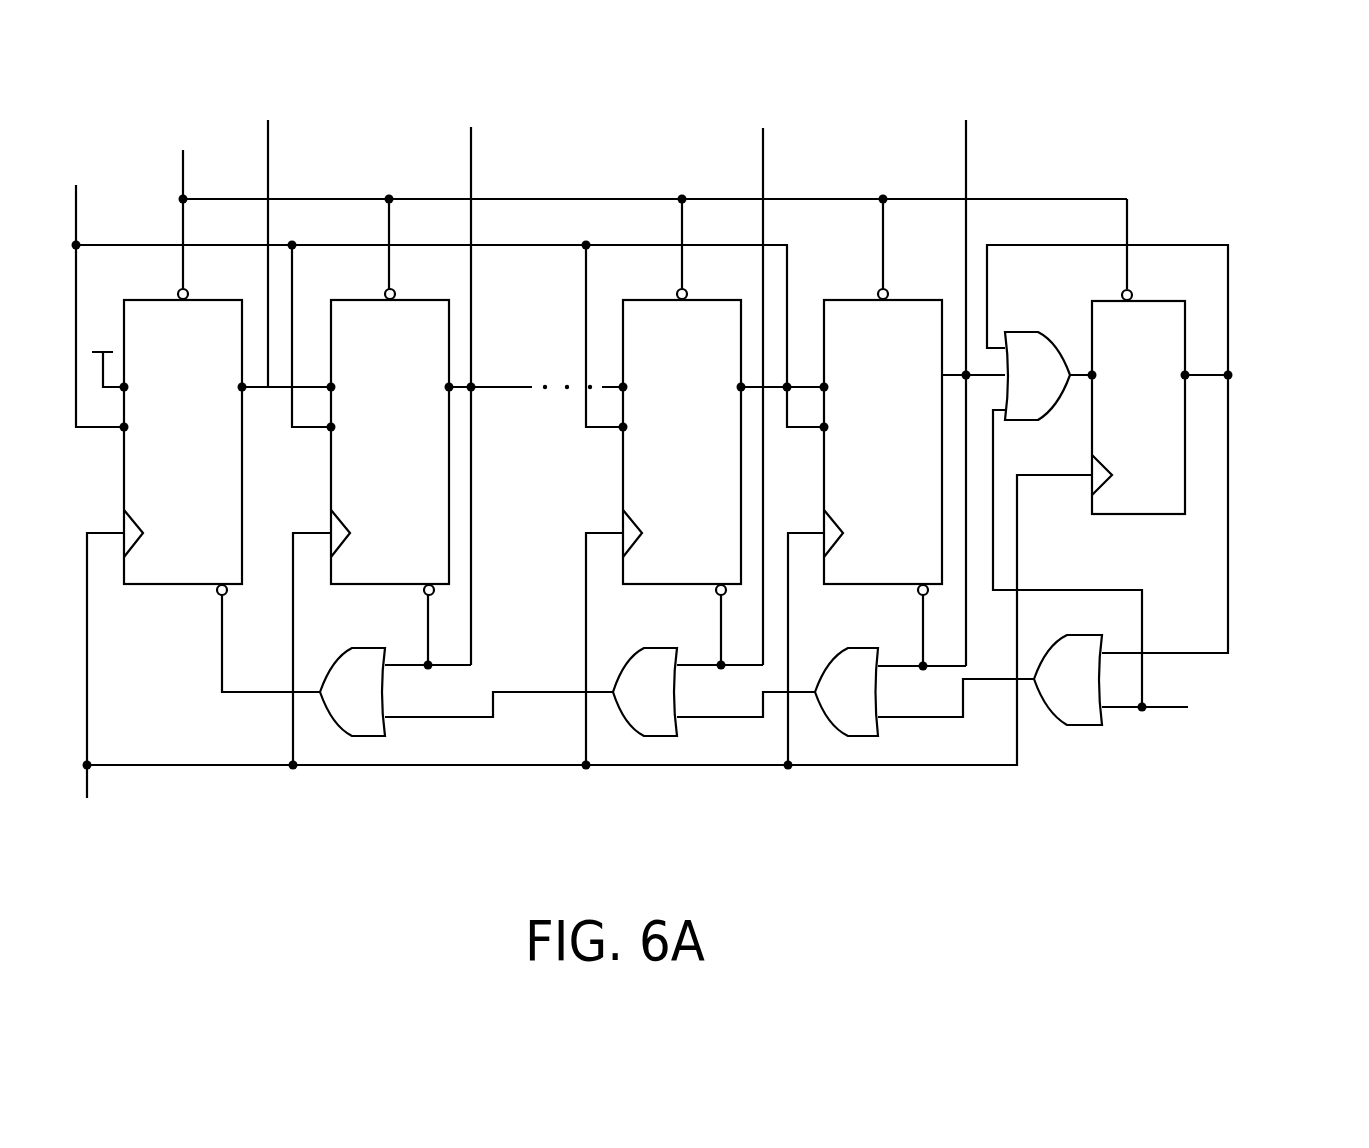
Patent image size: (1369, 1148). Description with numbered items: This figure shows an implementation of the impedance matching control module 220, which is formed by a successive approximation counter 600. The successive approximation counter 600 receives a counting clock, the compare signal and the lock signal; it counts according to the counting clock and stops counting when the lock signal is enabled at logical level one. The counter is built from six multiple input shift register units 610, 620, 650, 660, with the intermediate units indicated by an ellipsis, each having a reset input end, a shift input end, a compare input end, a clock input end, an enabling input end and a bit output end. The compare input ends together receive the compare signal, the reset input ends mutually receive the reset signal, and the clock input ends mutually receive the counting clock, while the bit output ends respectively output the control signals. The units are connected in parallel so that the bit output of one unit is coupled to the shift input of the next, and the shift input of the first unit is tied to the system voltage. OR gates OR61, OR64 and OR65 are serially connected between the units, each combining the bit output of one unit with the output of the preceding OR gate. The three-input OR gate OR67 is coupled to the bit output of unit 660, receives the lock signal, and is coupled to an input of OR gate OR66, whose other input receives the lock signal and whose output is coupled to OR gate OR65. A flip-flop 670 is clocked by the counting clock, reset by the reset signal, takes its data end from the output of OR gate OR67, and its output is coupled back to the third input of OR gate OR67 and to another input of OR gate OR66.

The successive approximation counter 600 is at (1253, 293).
The impedance matching control module 220 is at (1312, 812).
The multiple input shift register unit 610 is at (184, 584).
The multiple input shift register unit 620 is at (389, 584).
The multiple input shift register unit 650 is at (681, 584).
The multiple input shift register unit 660 is at (886, 584).
The flip-flop 670 is at (1155, 516).
The OR gate OR61 is at (372, 737).
The OR gate OR64 is at (663, 737).
The OR gate OR65 is at (866, 737).
The OR gate OR66 is at (1087, 725).
The OR gate OR67 is at (1019, 331).